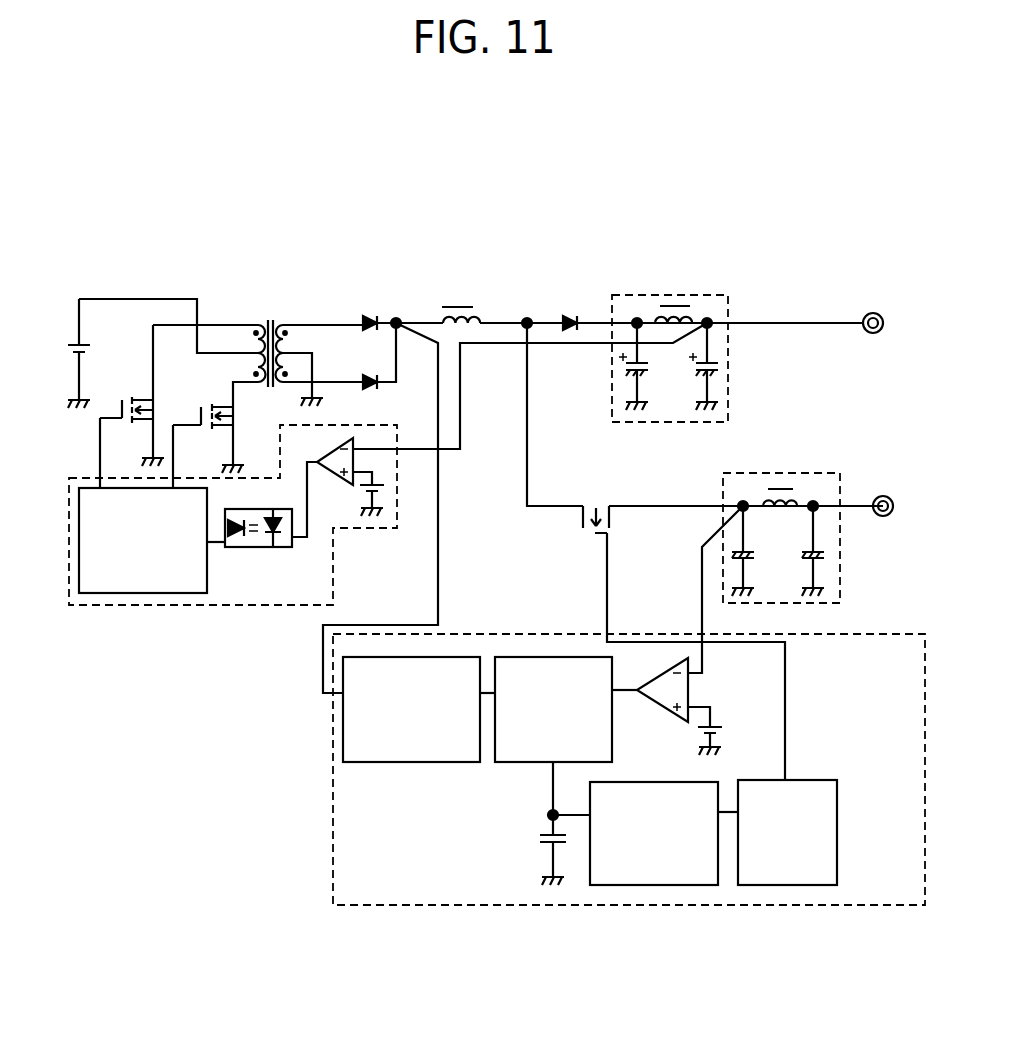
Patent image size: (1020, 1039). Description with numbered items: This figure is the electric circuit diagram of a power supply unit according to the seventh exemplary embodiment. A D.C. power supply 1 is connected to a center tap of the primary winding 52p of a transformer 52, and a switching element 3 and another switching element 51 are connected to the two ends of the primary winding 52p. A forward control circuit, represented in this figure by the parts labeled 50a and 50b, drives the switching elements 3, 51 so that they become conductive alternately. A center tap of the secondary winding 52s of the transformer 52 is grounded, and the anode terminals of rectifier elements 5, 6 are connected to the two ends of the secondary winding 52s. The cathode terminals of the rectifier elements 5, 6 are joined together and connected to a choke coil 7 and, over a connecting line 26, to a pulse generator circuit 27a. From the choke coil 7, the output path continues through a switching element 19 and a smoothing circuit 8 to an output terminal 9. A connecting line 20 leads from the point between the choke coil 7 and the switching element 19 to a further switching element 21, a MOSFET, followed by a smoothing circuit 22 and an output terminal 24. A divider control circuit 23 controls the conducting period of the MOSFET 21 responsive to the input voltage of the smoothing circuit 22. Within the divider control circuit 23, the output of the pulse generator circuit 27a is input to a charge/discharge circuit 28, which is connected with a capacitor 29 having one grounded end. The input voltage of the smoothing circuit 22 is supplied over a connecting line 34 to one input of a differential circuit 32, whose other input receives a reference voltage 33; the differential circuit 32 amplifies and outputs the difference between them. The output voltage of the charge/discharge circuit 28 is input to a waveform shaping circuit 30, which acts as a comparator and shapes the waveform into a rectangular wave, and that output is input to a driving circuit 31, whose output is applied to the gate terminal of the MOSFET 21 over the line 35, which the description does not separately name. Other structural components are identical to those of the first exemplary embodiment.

The D.C. power supply 1 is at (70, 328).
The switching element 3 is at (207, 398).
The rectifier element 5 is at (377, 310).
The rectifier element 6 is at (363, 372).
The choke coil 7 is at (460, 302).
The smoothing circuit 8 is at (675, 293).
The output terminal 9 is at (868, 311).
The switching element 19 is at (568, 310).
The connecting line 20 is at (530, 370).
The switching element 21 is at (592, 502).
The smoothing circuit 22 is at (763, 472).
The divider control circuit 23 is at (333, 855).
The output terminal 24 is at (877, 495).
The connecting line 26 is at (440, 487).
The pulse generator circuit 27a is at (362, 762).
The charge/discharge circuit 28 is at (522, 762).
The capacitor 29 is at (543, 855).
The waveform shaping circuit 30 is at (635, 887).
The driving circuit 31 is at (777, 887).
The differential circuit 32 is at (688, 685).
The reference voltage 33 is at (728, 730).
The connecting line 34 is at (700, 605).
The gate drive line 35 is at (606, 593).
The forward control circuit 50a is at (193, 596).
The photocoupler feedback circuit 50b is at (333, 472).
The switching element 51 is at (130, 395).
The transformer 52 is at (266, 287).
The primary winding 52p is at (217, 353).
The secondary winding 52s is at (297, 353).